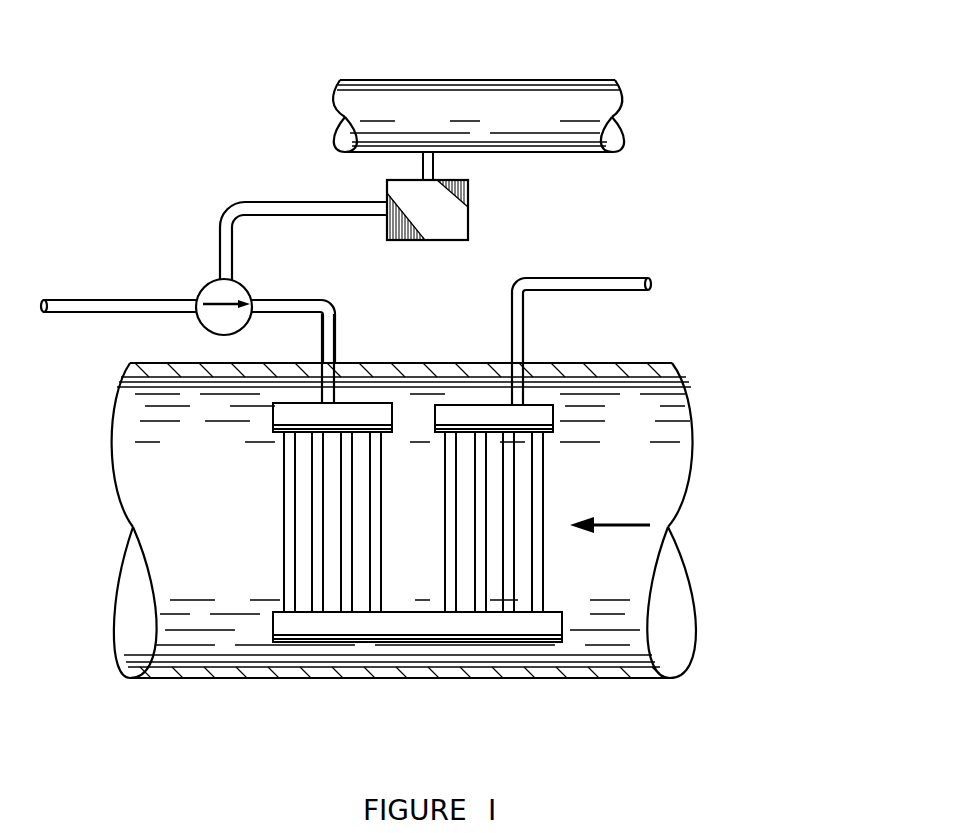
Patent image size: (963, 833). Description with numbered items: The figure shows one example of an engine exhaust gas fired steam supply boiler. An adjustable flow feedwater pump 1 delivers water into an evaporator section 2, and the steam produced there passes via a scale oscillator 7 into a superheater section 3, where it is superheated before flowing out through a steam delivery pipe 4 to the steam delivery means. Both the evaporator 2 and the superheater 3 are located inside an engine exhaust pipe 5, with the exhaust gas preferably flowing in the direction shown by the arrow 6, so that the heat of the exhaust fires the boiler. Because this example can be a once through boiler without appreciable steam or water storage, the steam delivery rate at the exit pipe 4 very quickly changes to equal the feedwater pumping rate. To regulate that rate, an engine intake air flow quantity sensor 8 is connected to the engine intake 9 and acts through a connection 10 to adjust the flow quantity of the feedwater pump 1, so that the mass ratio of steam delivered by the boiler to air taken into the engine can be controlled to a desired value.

The feedwater pump 1 is at (208, 290).
The evaporator section 2 is at (283, 505).
The superheater section 3 is at (543, 480).
The steam delivery pipe 4 is at (578, 280).
The engine exhaust pipe 5 is at (552, 678).
The arrow 6 is at (630, 522).
The scale oscillator 7 is at (402, 622).
The engine intake air flow quantity sensor 8 is at (468, 215).
The engine intake 9 is at (508, 80).
The connection 10 is at (283, 202).